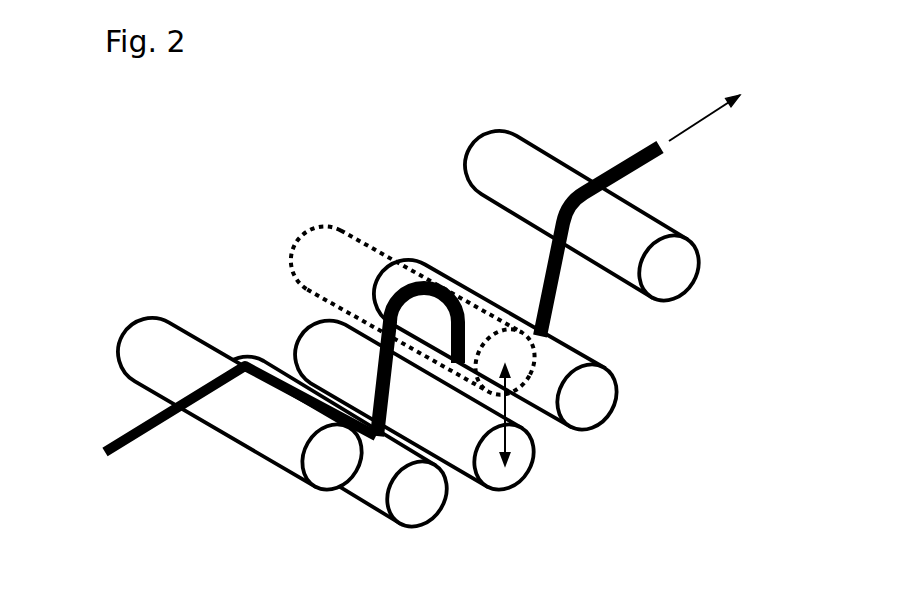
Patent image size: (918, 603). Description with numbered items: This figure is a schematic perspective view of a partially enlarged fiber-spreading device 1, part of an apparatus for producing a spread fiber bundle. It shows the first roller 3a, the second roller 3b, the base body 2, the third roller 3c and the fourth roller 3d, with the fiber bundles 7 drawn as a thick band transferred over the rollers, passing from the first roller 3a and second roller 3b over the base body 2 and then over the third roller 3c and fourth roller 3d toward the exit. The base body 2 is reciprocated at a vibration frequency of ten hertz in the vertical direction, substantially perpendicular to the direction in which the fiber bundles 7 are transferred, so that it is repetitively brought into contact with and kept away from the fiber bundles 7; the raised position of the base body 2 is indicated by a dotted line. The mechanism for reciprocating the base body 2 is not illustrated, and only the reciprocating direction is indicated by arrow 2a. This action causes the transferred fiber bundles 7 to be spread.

The fiber-spreading device 1 is at (252, 259).
The base body 2 is at (300, 333).
The arrow 2a is at (507, 403).
The first roller 3a is at (287, 473).
The second roller 3b is at (440, 509).
The third roller 3c is at (607, 418).
The fourth roller 3d is at (687, 290).
The fiber bundles 7 is at (152, 430).